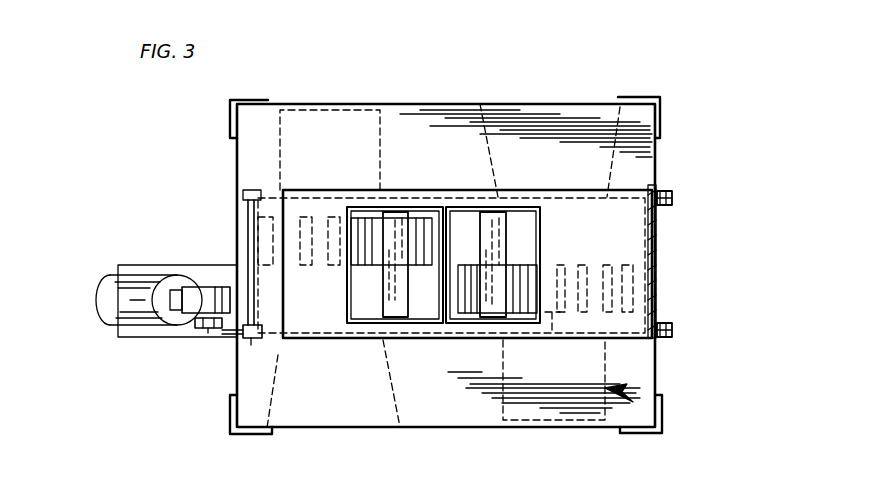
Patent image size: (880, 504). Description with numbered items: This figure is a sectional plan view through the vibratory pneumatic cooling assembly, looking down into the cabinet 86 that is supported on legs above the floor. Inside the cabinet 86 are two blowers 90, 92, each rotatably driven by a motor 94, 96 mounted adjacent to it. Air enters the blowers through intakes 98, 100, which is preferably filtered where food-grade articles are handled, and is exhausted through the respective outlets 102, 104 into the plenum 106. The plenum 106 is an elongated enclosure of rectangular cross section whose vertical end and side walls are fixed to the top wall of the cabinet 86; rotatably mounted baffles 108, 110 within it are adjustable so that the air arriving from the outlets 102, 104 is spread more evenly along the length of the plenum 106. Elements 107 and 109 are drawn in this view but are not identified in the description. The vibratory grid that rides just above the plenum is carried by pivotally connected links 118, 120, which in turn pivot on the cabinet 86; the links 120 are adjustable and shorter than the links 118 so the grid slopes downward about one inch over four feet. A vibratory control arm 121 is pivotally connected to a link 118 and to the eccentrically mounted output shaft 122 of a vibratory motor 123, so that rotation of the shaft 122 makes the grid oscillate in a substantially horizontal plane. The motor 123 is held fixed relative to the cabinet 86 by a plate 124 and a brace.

The cabinet 86 is at (237, 157).
The blower 90 is at (380, 130).
The blower 92 is at (665, 417).
The motor 94 is at (358, 110).
The motor 96 is at (585, 410).
The intake 98 is at (374, 418).
The intake 100 is at (515, 108).
The outlet 102 is at (370, 312).
The outlet 104 is at (528, 218).
The plenum 106 is at (312, 190).
The tray 107 is at (365, 190).
The baffle 108 is at (423, 217).
The slat band 109 is at (467, 307).
The baffle 110 is at (500, 302).
The link 118 is at (255, 342).
The link 120 is at (672, 198).
The vibratory control arm 121 is at (235, 340).
The output shaft 122 is at (207, 332).
The vibratory motor 123 is at (100, 300).
The plate 124 is at (168, 333).